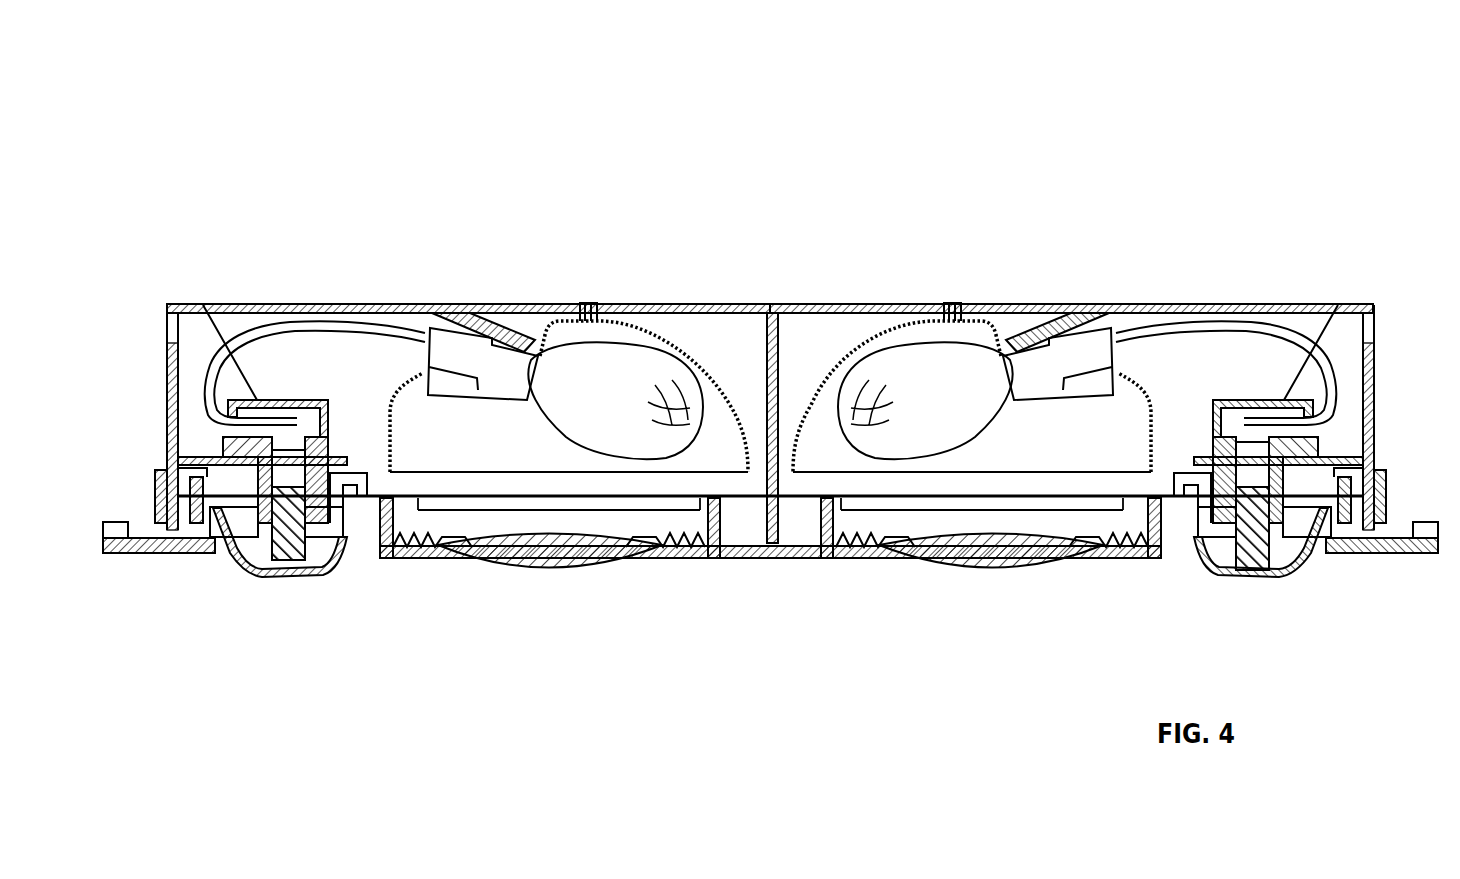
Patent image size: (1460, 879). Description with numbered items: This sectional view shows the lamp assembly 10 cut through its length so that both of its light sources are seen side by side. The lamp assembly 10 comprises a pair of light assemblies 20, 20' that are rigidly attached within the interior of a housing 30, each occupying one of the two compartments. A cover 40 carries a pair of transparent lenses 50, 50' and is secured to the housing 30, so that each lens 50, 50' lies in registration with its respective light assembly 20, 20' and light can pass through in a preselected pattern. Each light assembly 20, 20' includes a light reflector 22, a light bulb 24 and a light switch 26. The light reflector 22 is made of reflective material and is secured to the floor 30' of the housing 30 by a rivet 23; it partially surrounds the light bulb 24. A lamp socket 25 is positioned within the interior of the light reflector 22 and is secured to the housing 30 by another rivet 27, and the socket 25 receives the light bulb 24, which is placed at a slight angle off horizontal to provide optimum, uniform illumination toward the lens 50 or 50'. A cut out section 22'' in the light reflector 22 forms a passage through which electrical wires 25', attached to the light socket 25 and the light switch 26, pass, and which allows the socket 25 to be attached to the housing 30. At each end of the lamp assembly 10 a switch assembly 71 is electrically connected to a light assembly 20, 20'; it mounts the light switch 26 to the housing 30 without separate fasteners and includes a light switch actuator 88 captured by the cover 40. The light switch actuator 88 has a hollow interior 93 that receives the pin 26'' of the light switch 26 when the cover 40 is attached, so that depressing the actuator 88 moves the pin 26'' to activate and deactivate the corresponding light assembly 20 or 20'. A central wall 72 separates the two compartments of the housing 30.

The lamp assembly 10 is at (1240, 138).
The light assembly 20 is at (359, 236).
The light assembly 20' is at (1081, 228).
The light reflector 22 is at (998, 396).
The cut out section 22'' is at (542, 396).
The rivet 23 is at (587, 304).
The light bulb 24 is at (585, 425).
The lamp socket 25 is at (770, 389).
The electrical wires 25' is at (722, 334).
The light switch 26 is at (1330, 428).
The pin 26'' is at (764, 547).
The rivet 27 is at (473, 304).
The housing 30 is at (1071, 275).
The floor 30' is at (468, 274).
The cover 40 is at (150, 553).
The lens 50 is at (550, 591).
The lens 50' is at (991, 588).
The switch assembly 71 is at (360, 592).
The partition wall 72 is at (787, 304).
The light switch actuator 88 is at (325, 578).
The hollow interior 93 is at (240, 558).